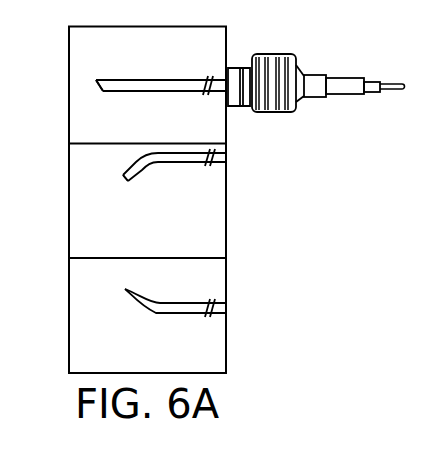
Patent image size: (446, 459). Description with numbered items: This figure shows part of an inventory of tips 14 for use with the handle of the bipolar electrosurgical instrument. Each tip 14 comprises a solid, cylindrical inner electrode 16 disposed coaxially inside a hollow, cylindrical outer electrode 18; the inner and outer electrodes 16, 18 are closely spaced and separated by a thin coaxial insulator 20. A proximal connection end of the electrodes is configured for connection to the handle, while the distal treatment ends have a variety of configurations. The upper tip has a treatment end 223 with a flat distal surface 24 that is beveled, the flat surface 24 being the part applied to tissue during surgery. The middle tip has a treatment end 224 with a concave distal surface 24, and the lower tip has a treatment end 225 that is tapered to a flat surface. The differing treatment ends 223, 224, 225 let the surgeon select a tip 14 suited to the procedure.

The tip 14 is at (299, 68).
The inner electrode 16 is at (396, 83).
The outer electrode 18 is at (342, 95).
The coaxial insulator 20 is at (379, 92).
The treatment end 223 is at (137, 77).
The treatment end 224 is at (182, 167).
The treatment end 225 is at (182, 313).
The flat surface 24 is at (118, 195).